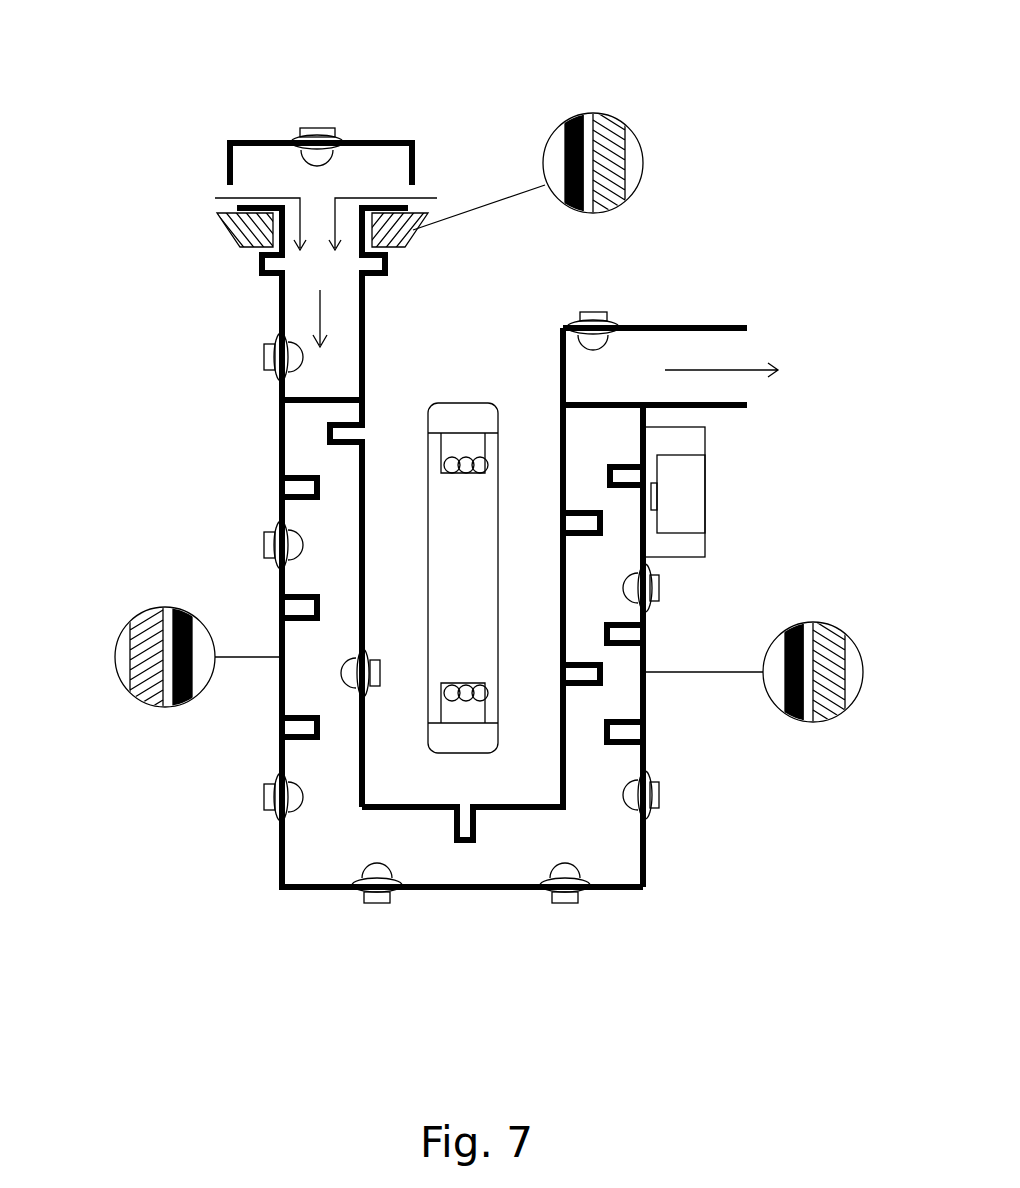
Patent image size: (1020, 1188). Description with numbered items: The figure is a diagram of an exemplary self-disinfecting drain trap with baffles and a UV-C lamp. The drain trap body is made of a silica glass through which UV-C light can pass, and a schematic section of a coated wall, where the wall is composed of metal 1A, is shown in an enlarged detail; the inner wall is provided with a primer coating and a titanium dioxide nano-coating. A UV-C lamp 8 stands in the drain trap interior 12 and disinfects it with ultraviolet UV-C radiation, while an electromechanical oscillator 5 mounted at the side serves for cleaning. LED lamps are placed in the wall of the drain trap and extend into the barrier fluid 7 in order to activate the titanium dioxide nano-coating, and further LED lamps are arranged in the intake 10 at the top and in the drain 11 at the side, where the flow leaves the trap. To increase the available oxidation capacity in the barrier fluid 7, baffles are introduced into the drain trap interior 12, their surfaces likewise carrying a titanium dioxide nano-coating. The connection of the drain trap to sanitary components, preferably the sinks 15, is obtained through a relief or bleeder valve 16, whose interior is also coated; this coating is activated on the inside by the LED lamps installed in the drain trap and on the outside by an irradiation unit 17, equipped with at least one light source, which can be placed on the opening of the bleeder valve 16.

The metal wall 1A is at (546, 183).
The electromechanical oscillator 5 is at (688, 498).
The barrier fluid 7 is at (345, 836).
The UV-C lamp 8 is at (463, 585).
The intake 10 is at (305, 313).
The drain 11 is at (602, 402).
The drain trap interior 12 is at (338, 528).
The sink 15 is at (240, 230).
The bleeder valve 16 is at (273, 210).
The irradiation unit 17 is at (293, 172).